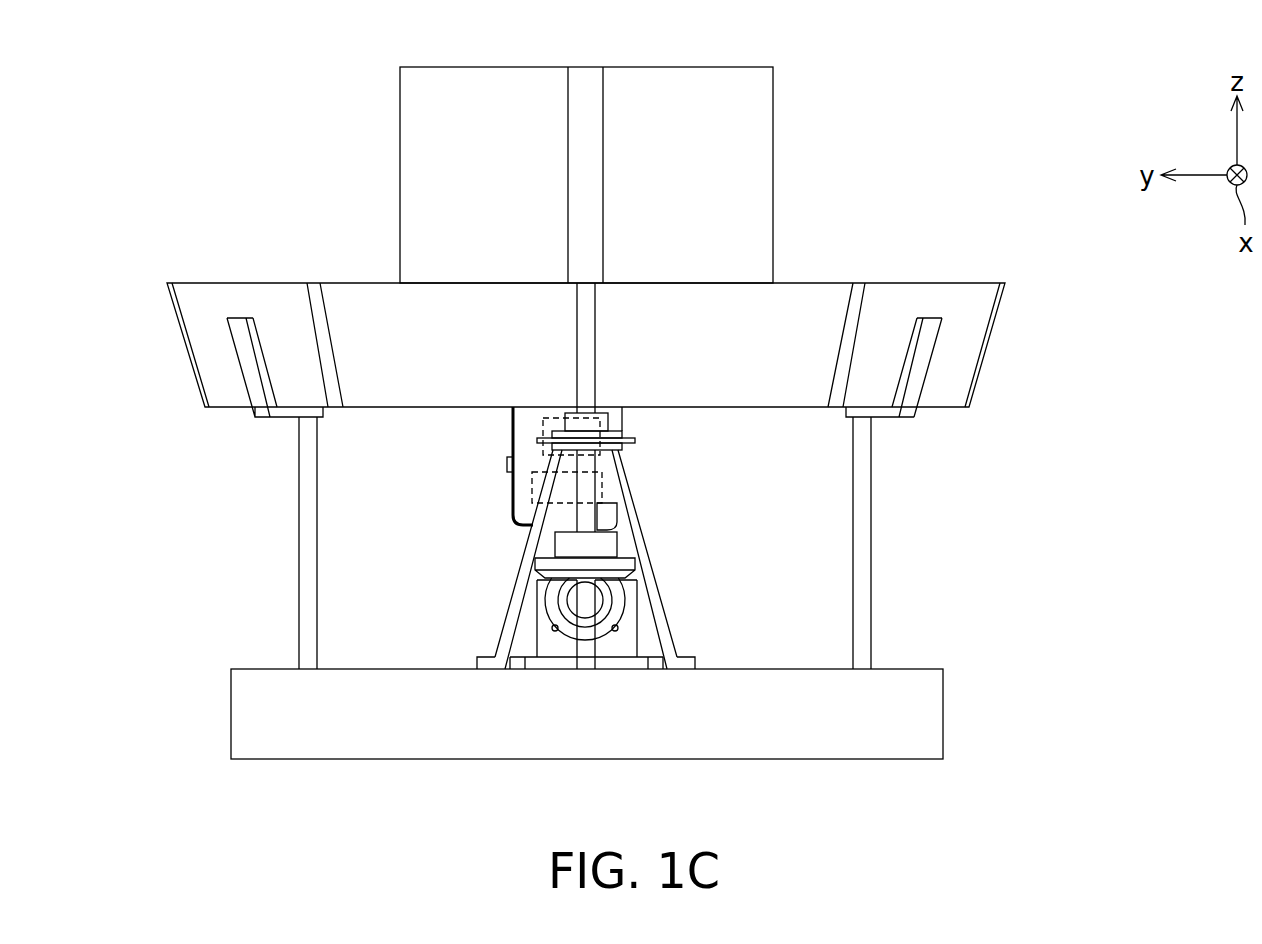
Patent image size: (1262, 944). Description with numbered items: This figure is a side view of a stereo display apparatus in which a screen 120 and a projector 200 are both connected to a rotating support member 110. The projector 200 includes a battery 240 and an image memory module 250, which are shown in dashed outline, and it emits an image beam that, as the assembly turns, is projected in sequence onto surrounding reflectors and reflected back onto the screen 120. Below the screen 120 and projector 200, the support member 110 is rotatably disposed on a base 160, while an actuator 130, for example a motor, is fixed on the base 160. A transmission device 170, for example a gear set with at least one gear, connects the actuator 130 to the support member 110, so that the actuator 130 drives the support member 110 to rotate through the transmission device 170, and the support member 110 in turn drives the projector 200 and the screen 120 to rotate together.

The screen 120 is at (762, 127).
The support member 110 is at (563, 420).
The image memory module 250 is at (542, 450).
The battery 240 is at (533, 488).
The projector 200 is at (608, 508).
The actuator 130 is at (638, 617).
The transmission device 170 is at (600, 630).
The base 160 is at (922, 705).